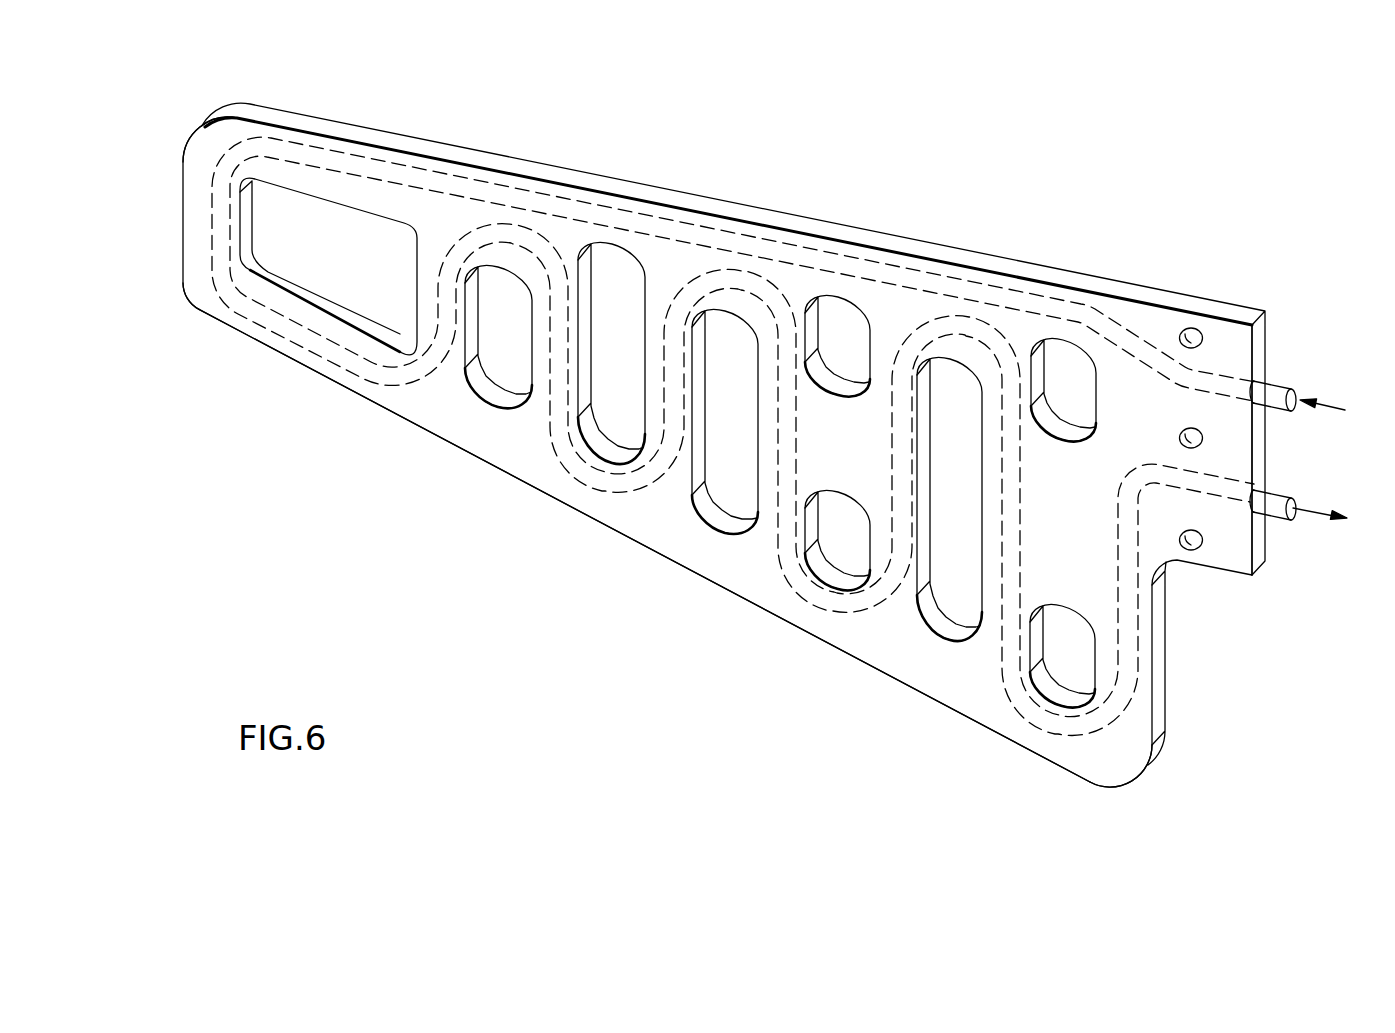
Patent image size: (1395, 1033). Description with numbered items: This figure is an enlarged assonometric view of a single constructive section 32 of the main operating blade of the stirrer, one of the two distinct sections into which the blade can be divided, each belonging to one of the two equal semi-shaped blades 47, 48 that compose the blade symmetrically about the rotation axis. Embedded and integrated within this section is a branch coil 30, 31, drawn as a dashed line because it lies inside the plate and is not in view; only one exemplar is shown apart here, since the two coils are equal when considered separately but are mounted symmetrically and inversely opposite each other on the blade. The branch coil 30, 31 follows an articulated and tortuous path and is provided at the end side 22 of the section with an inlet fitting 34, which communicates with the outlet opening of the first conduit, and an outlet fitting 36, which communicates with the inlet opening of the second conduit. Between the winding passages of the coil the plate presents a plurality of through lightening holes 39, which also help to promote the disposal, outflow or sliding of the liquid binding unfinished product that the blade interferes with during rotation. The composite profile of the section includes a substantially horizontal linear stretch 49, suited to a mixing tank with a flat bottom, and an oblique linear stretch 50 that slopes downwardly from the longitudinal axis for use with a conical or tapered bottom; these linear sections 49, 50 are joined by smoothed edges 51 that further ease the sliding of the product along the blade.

The branch coil 30 is at (737, 433).
The branch coil 31 is at (737, 433).
The constructive section 32 is at (1235, 410).
The end side 22 is at (1234, 352).
The inlet fitting 34 is at (1278, 392).
The outlet fitting 36 is at (1278, 514).
The through lightening holes 39 is at (318, 265).
The semi-shaped blade 47 is at (733, 436).
The semi-shaped blade 48 is at (1113, 278).
The substantially horizontal linear stretch 49 is at (602, 175).
The oblique linear stretch 50 is at (777, 616).
The smoothed edges 51 is at (197, 128).